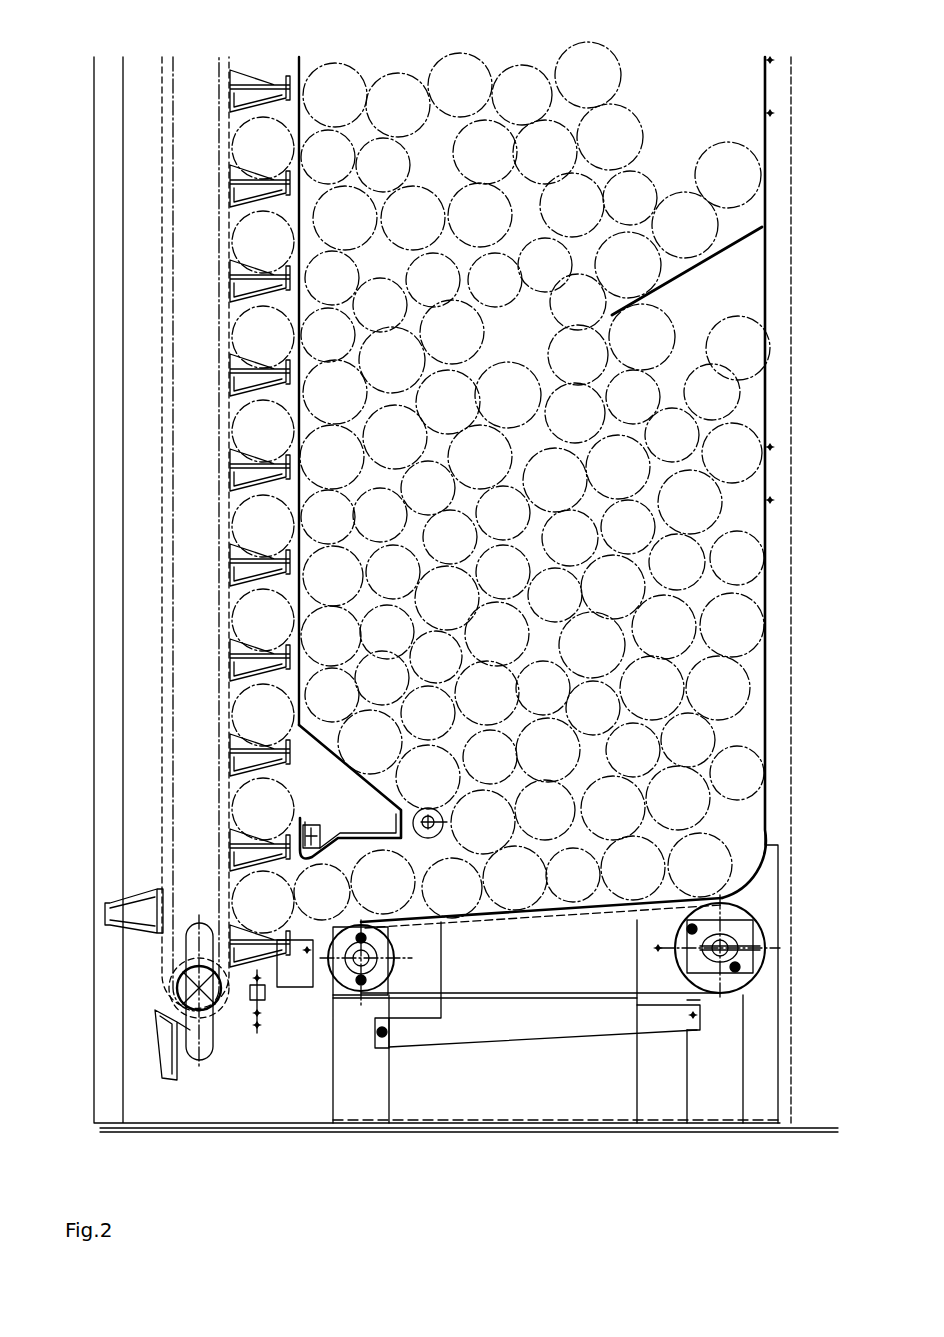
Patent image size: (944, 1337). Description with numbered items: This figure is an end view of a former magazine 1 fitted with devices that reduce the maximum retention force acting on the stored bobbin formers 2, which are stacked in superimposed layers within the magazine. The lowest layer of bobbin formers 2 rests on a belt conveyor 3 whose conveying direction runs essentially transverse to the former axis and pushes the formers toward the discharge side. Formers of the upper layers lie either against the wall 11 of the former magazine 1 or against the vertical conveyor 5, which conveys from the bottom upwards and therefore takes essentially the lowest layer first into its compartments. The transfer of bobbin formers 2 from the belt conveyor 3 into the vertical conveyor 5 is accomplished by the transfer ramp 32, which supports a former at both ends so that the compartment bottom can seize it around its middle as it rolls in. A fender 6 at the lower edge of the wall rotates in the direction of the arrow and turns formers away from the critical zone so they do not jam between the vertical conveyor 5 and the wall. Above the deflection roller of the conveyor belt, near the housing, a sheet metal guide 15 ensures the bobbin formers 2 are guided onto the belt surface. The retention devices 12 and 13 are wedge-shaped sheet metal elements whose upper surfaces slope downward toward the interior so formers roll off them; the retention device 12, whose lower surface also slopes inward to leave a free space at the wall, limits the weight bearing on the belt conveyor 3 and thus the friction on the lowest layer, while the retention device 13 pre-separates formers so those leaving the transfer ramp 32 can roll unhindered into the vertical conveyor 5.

The former magazine 1 is at (683, 100).
The bobbin formers 2 is at (742, 622).
The belt conveyor 3 is at (572, 952).
The vertical conveyor 5 is at (183, 535).
The fender 6 is at (428, 840).
The wall 11 is at (300, 210).
The retention device 12 is at (717, 260).
The retention device 13 is at (340, 807).
The sheet metal guide 15 is at (753, 860).
The transfer ramp 32 is at (287, 957).